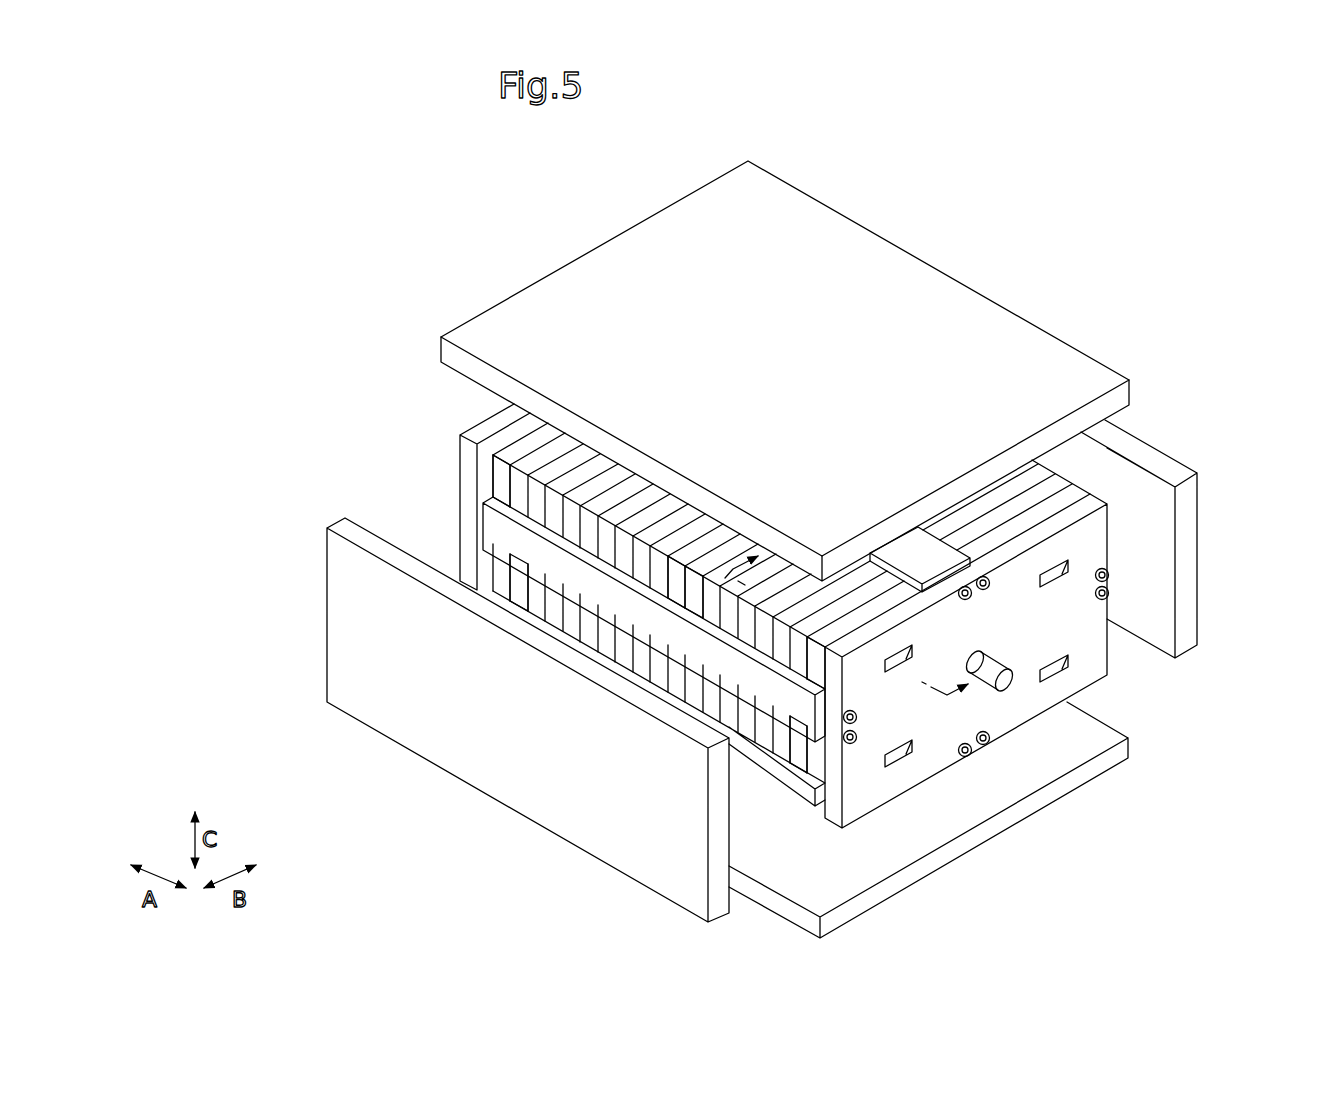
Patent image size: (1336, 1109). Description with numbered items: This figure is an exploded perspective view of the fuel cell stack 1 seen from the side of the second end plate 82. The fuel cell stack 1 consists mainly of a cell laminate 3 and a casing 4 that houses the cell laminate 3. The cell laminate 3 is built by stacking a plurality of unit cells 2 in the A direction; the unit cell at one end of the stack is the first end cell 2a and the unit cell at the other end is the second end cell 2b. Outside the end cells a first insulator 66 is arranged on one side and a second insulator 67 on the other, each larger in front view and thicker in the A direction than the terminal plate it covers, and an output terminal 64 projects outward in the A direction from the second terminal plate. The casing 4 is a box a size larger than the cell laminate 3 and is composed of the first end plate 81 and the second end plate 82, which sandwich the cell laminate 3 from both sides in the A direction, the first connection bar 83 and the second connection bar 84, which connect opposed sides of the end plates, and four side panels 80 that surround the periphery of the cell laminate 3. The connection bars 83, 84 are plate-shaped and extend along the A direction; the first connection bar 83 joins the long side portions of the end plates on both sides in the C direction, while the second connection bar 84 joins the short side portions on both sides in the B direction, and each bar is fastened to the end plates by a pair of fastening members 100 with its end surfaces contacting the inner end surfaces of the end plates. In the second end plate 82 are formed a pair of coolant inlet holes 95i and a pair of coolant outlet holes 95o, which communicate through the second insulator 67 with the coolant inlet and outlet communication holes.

The fuel cell stack 1 is at (1107, 297).
The unit cell 2 is at (694, 594).
The first end cell 2a is at (515, 592).
The second end cell 2b is at (795, 757).
The cell laminate 3 is at (659, 517).
The casing 4 is at (977, 278).
The end plate 64 is at (1012, 687).
The first insulator 66 is at (497, 478).
The second insulator 67 is at (806, 645).
The side panel 80 is at (897, 262).
The first end plate 81 is at (470, 433).
The second end plate 82 is at (1097, 768).
The first connection bar 83 is at (920, 543).
The second connection bar 84 is at (497, 533).
The coolant inlet hole 95i is at (906, 658).
The coolant outlet hole 95o is at (1064, 570).
The fastening member 100 is at (984, 578).